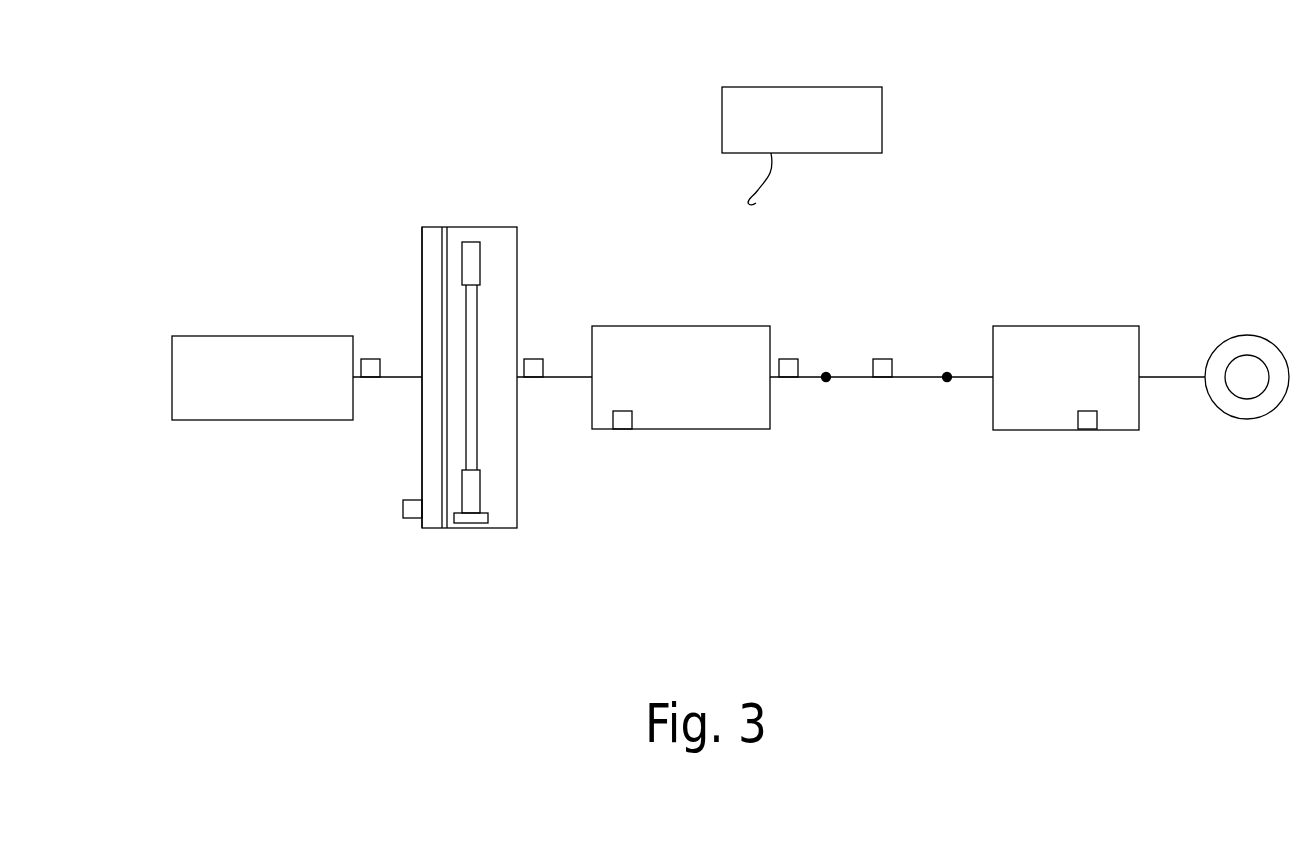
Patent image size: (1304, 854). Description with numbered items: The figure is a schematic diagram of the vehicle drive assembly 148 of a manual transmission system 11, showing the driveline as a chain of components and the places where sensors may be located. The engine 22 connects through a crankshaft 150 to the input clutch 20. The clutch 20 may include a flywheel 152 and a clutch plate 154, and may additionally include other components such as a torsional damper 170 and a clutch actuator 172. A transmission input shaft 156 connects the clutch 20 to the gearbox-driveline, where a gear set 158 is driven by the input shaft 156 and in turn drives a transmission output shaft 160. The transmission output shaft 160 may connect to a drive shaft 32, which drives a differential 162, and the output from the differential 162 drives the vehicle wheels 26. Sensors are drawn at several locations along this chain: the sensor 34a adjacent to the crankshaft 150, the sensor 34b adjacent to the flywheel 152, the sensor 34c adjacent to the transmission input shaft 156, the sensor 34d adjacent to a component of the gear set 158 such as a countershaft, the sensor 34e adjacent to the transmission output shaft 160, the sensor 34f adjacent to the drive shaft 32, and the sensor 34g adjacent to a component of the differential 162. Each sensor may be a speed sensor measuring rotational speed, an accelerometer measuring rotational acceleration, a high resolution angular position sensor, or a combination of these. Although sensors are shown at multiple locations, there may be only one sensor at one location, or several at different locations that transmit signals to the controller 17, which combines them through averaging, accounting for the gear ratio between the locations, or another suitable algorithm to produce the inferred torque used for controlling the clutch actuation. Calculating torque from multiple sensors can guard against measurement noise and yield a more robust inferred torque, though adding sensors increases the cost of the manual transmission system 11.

The manual transmission system 11 is at (680, 542).
The controller 17 is at (853, 87).
The input clutch 20 is at (490, 528).
The engine 22 is at (210, 336).
The vehicle wheels 26 is at (1218, 410).
The drive shaft 32 is at (915, 380).
The sensor 34a is at (369, 359).
The sensor 34b is at (400, 510).
The sensor 34c is at (533, 358).
The sensor 34d is at (620, 432).
The sensor 34e is at (787, 358).
The sensor 34f is at (878, 358).
The sensor 34g is at (1087, 431).
The vehicle drive assembly 148 is at (917, 194).
The crankshaft 150 is at (393, 380).
The flywheel 152 is at (422, 250).
The clutch plate 154 is at (482, 252).
The transmission input shaft 156 is at (566, 380).
The gear set 158 is at (657, 326).
The transmission output shaft 160 is at (808, 380).
The differential 162 is at (1088, 326).
The torsional damper 170 is at (445, 235).
The clutch actuator 172 is at (463, 525).